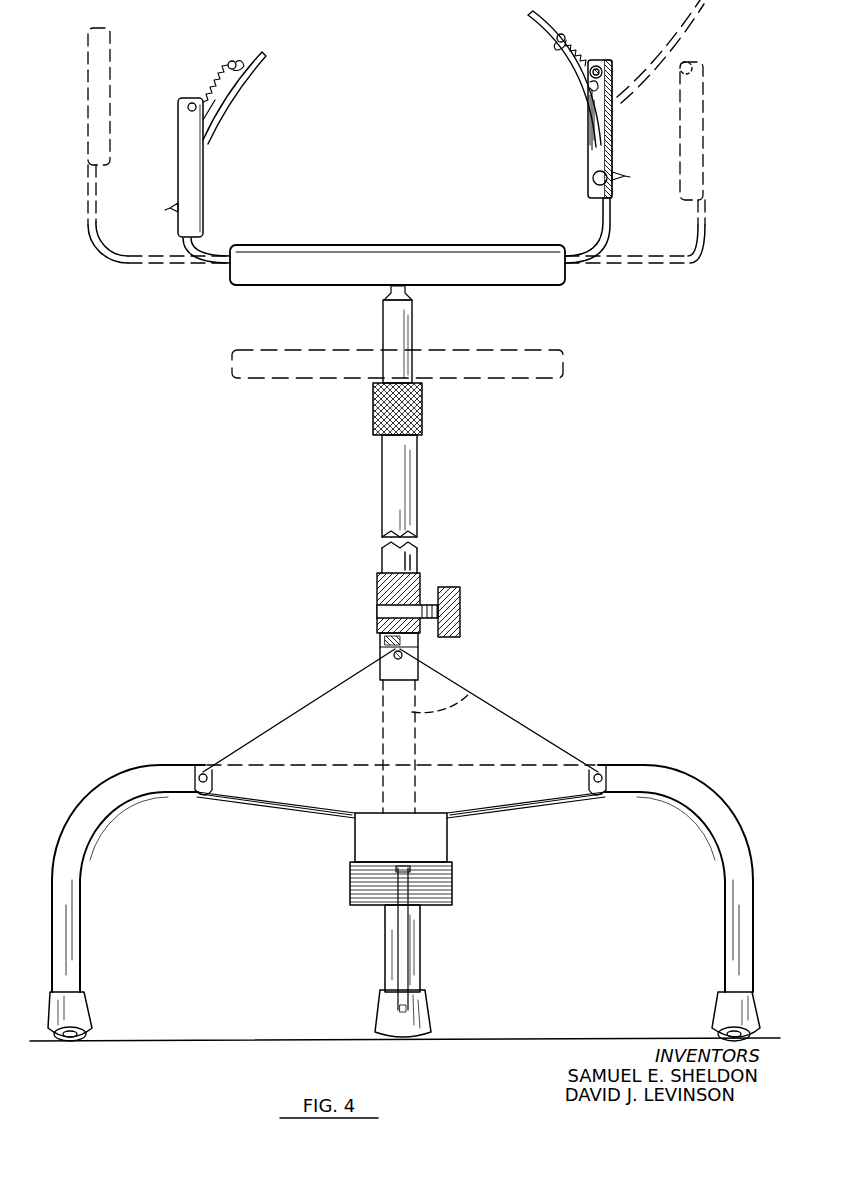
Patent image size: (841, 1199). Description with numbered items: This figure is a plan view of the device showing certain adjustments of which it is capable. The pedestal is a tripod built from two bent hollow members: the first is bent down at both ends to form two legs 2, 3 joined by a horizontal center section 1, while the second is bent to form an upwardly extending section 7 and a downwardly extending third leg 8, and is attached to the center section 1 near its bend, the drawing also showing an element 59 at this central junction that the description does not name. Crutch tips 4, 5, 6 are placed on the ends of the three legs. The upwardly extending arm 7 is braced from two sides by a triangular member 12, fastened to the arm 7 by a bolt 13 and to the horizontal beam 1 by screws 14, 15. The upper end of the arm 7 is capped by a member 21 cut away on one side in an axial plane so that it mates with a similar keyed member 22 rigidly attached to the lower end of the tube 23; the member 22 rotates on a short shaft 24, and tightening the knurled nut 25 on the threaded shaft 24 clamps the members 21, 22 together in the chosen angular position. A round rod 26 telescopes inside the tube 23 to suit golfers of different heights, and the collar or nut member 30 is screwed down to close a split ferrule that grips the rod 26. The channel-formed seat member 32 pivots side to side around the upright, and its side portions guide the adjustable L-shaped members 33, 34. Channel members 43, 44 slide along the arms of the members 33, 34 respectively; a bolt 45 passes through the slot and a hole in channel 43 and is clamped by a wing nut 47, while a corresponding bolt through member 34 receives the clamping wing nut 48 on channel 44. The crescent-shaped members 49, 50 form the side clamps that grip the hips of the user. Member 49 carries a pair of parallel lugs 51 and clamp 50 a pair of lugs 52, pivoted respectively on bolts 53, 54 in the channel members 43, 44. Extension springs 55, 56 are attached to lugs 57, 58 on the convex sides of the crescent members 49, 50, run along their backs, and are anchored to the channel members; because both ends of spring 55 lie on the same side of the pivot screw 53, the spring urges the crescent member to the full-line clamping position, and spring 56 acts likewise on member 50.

The horizontal center section 1 is at (404, 875).
The leg 2 is at (73, 920).
The leg 3 is at (727, 860).
The crutch tip 4 is at (88, 1015).
The crutch tip 5 is at (728, 1007).
The crutch tip 6 is at (425, 1015).
The upwardly extending section 7 is at (468, 695).
The downwardly extending third leg 8 is at (415, 963).
The triangular member 12 is at (298, 717).
The bolt 13 is at (390, 652).
The screw 14 is at (203, 770).
The screw 15 is at (595, 768).
The cap member 21 is at (419, 604).
The mating member 22 is at (377, 590).
The tube 23 is at (410, 558).
The short shaft 24 is at (377, 613).
The knurled nut 25 is at (460, 593).
The round rod 26 is at (400, 327).
The collar or nut member 30 is at (412, 407).
The seat member 32 is at (302, 273).
The L-shaped member 33 is at (608, 228).
The L-shaped member 34 is at (103, 257).
The channel member 43 is at (612, 145).
The channel member 44 is at (95, 125).
The bolt 45 is at (598, 173).
The wing nut 47 is at (615, 175).
The wing nut 48 is at (177, 203).
The crescent-shaped member 49 is at (533, 27).
The crescent-shaped clamp 50 is at (220, 112).
The lugs 51 is at (590, 80).
The lugs 52 is at (207, 113).
The bolt 53 is at (597, 65).
The bolt 54 is at (193, 100).
The extension spring 55 is at (577, 53).
The extension spring 56 is at (223, 77).
The lug 57 is at (562, 38).
The lug 58 is at (233, 60).
The hub 59 is at (443, 845).